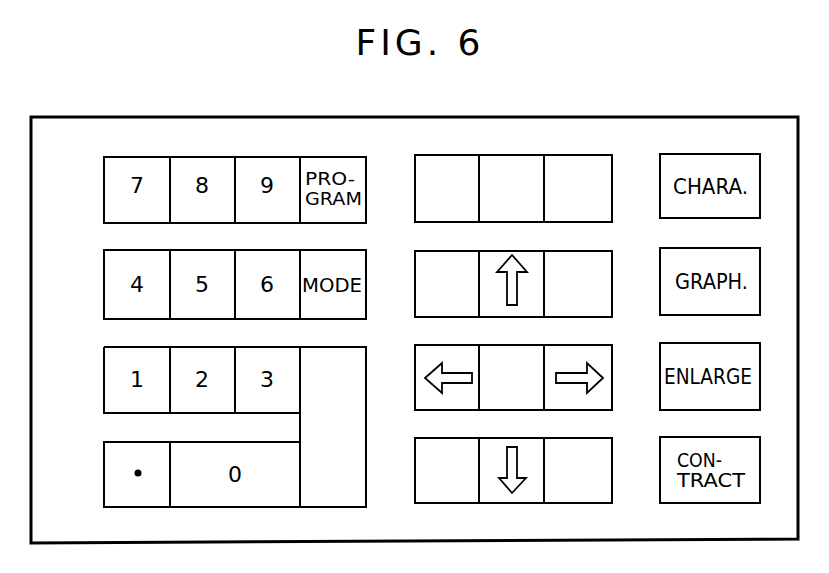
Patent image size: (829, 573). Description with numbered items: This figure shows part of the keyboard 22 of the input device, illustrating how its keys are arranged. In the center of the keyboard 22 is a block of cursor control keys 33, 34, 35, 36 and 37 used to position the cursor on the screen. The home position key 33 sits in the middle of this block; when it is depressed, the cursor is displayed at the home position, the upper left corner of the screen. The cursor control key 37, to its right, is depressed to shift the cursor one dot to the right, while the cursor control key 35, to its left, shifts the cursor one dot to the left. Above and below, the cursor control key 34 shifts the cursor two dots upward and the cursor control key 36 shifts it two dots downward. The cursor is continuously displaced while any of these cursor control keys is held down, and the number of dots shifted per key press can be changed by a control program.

The keyboard 22 is at (579, 118).
The home position key 33 is at (516, 397).
The cursor control key 34 is at (512, 254).
The cursor control key 35 is at (449, 360).
The cursor control key 36 is at (523, 490).
The cursor control key 37 is at (598, 397).